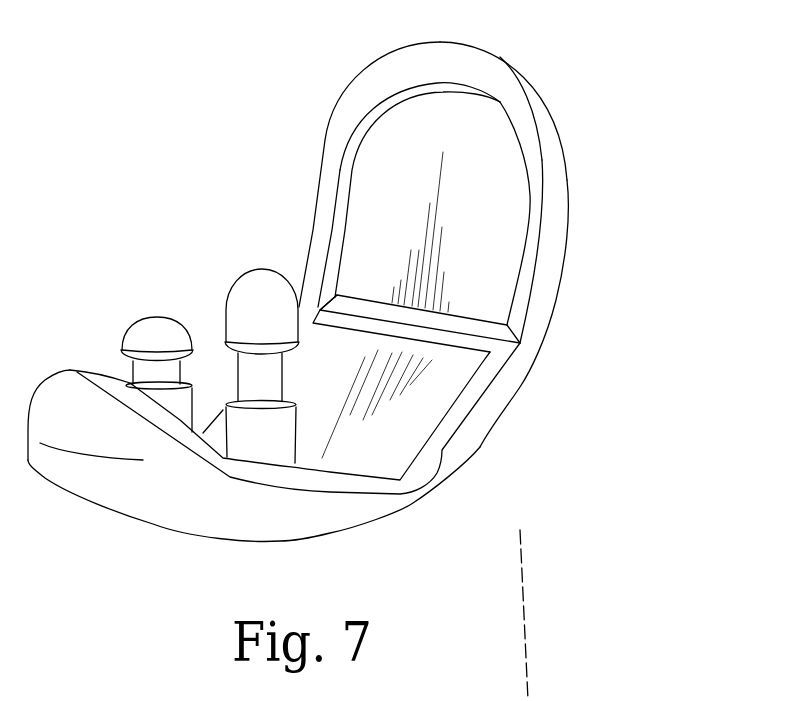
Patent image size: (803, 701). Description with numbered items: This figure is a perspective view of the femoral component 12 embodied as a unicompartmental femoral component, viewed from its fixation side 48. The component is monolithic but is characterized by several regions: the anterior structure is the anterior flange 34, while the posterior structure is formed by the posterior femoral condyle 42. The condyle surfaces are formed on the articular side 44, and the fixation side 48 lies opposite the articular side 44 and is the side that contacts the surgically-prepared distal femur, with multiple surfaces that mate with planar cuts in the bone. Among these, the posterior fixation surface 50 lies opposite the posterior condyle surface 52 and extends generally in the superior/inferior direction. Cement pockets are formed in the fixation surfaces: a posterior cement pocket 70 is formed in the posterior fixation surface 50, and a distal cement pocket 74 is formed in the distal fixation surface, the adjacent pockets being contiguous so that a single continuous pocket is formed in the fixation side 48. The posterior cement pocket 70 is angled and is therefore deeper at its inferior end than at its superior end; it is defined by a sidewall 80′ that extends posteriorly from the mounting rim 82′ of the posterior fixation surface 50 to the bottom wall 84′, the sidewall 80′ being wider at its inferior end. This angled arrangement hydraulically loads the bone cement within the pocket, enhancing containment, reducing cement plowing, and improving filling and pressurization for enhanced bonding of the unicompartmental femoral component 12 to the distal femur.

The femoral component 12 is at (630, 112).
The anterior flange 34 is at (95, 480).
The posterior femoral condyle 42 is at (537, 88).
The articular side 44 is at (200, 540).
The fixation side 48 is at (317, 229).
The posterior fixation surface 50 is at (520, 292).
The posterior condyle surface 52 is at (568, 173).
The posterior cement pocket 70 is at (488, 255).
The distal cement pocket 74 is at (423, 408).
The sidewall 80′ is at (343, 177).
The mounting rim 82′ is at (392, 60).
The bottom wall 84′ is at (523, 217).